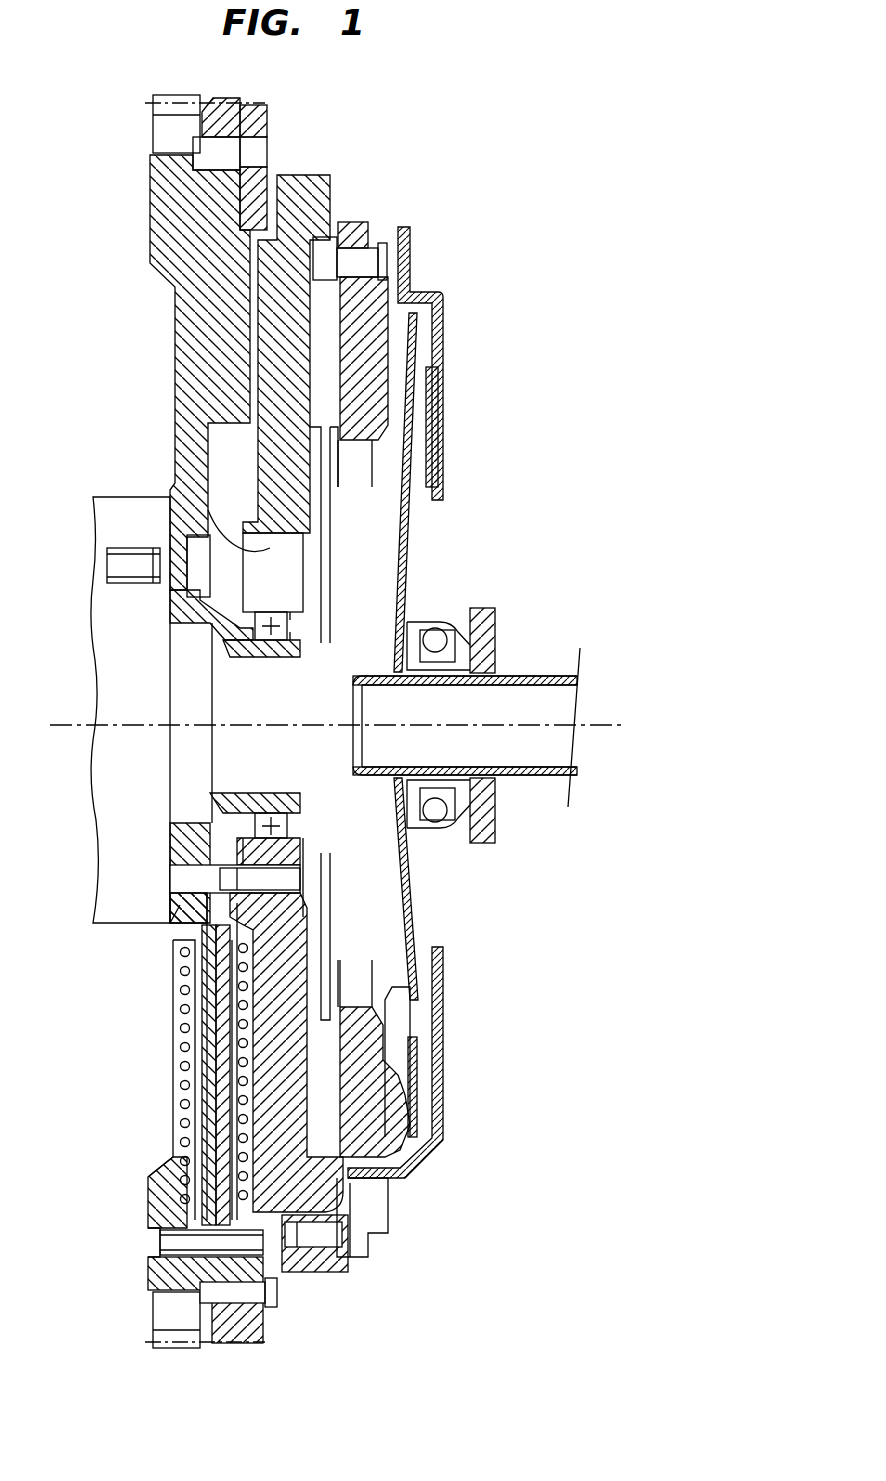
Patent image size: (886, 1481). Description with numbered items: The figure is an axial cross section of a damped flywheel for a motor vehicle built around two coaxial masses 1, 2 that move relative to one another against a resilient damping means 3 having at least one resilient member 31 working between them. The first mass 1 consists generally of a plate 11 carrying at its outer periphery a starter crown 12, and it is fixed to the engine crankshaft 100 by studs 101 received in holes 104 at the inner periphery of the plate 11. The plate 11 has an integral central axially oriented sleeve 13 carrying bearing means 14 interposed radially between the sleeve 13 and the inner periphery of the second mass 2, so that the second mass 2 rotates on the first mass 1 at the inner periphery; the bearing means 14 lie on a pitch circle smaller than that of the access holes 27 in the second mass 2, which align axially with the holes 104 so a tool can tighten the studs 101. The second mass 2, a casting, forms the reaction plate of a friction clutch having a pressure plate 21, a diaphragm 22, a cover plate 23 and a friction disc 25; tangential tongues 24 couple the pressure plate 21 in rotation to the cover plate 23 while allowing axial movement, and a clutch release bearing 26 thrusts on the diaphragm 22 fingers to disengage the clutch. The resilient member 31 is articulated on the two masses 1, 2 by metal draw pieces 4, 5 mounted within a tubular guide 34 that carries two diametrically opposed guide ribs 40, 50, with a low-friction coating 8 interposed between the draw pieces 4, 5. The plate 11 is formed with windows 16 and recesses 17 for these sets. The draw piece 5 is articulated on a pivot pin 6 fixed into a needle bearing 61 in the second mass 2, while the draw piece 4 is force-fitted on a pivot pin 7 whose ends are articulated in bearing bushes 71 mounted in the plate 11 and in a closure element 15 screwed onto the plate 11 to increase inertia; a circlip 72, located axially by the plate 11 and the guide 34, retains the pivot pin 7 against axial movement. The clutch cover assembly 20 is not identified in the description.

The first mass 1 is at (135, 208).
The second mass 2 is at (328, 158).
The resilient damping means 3 is at (254, 1137).
The draw piece 4 is at (185, 1050).
The draw piece 5 is at (215, 955).
The pivot pin 6 is at (285, 880).
The pivot pin 7 is at (160, 1240).
The coating 8 is at (215, 1103).
The plate 11 is at (185, 285).
The starter crown 12 is at (153, 137).
The sleeve 13 is at (170, 616).
The bearing means 14 is at (265, 640).
The closure element 15 is at (268, 125).
The window 16 is at (205, 933).
The recess 17 is at (185, 1185).
The clutch cover 20 is at (333, 1274).
The pressure plate 21 is at (357, 220).
The diaphragm 22 is at (415, 920).
The cover plate 23 is at (445, 326).
The tangential tongues 24 is at (380, 240).
The friction disc 25 is at (354, 523).
The clutch release bearing 26 is at (510, 612).
The hole 27 is at (208, 510).
The resilient member 31 is at (185, 1148).
The tubular guide 34 is at (230, 1195).
The guide rib 40 is at (195, 1022).
The guide rib 50 is at (232, 1168).
The needle bearing 61 is at (256, 860).
The bearing bush 71 is at (165, 1260).
The circlip 72 is at (185, 1245).
The crankshaft 100 is at (97, 497).
The stud 101 is at (196, 560).
The hole 104 is at (150, 576).